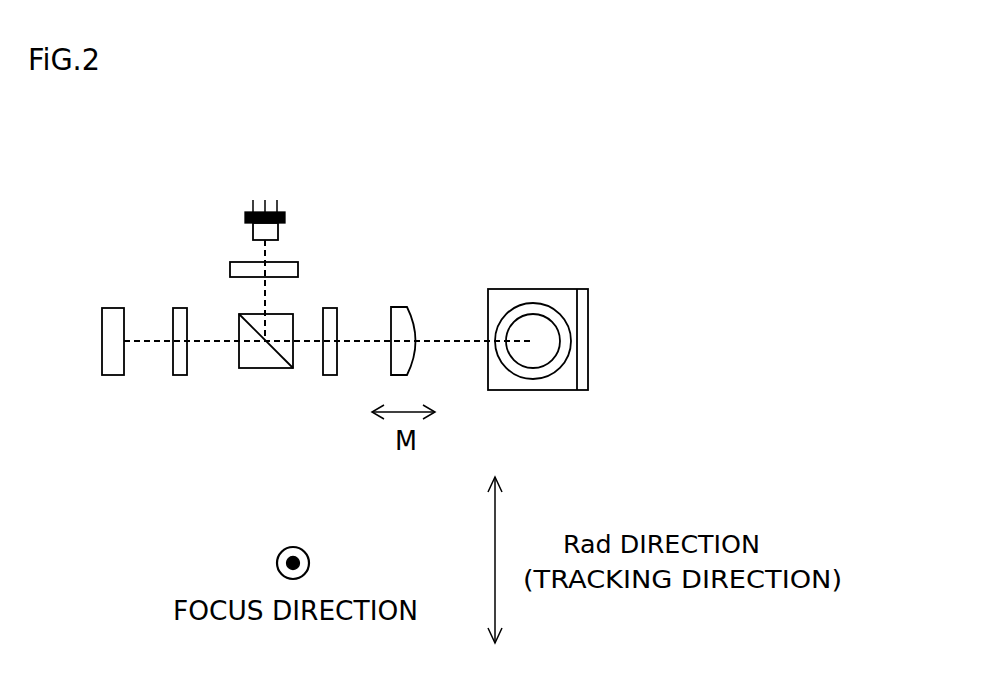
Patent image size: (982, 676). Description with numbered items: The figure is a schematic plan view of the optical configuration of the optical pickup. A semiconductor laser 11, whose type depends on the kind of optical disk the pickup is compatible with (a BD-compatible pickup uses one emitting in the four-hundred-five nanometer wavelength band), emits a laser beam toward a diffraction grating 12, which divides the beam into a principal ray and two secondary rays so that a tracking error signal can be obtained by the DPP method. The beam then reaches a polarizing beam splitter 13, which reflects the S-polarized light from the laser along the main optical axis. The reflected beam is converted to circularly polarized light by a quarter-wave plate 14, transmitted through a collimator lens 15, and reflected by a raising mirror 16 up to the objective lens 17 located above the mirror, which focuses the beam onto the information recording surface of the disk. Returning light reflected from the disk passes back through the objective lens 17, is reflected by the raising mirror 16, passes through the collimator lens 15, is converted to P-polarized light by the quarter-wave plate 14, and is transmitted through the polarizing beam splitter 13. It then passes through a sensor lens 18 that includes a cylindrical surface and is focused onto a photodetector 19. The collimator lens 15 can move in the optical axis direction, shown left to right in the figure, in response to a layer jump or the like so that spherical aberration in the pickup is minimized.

The semiconductor laser 11 is at (245, 218).
The diffraction grating 12 is at (230, 272).
The polarizing beam splitter 13 is at (262, 370).
The quarter-wave plate 14 is at (332, 378).
The collimator lens 15 is at (398, 307).
The raising mirror 16 is at (580, 289).
The objective lens 17 is at (535, 378).
The sensor lens 18 is at (178, 308).
The photodetector 19 is at (110, 376).